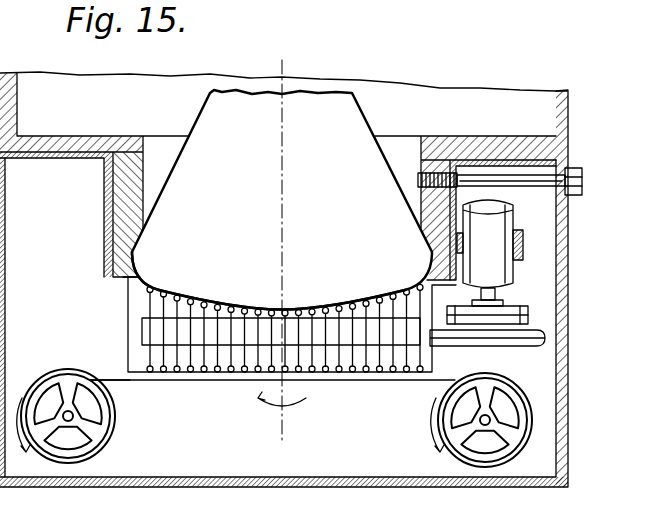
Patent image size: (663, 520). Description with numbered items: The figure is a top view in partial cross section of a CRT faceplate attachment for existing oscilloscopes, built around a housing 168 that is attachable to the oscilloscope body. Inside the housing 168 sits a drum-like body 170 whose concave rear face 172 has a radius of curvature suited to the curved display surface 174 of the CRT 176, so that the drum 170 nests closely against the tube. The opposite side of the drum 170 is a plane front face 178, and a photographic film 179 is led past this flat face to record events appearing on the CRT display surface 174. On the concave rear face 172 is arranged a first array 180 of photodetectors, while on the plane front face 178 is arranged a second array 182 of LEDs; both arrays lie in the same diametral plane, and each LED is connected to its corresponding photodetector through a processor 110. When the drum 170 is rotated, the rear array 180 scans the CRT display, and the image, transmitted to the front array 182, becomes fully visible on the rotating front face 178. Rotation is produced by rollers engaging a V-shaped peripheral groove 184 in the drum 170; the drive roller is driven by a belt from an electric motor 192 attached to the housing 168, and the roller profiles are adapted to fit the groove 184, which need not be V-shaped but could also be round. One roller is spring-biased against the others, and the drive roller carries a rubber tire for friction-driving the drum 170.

The processor 110 is at (254, 335).
The housing 168 is at (567, 408).
The drum-like body 170 is at (132, 297).
The concave rear face 172 is at (146, 280).
The display surface 174 is at (186, 300).
The CRT 176 is at (282, 200).
The plane front face 178 is at (178, 372).
The photographic film 179 is at (114, 378).
The first array 180 is at (300, 304).
The second array 182 is at (346, 380).
The V-shaped peripheral groove 184 is at (142, 332).
The electric motor 192 is at (492, 218).